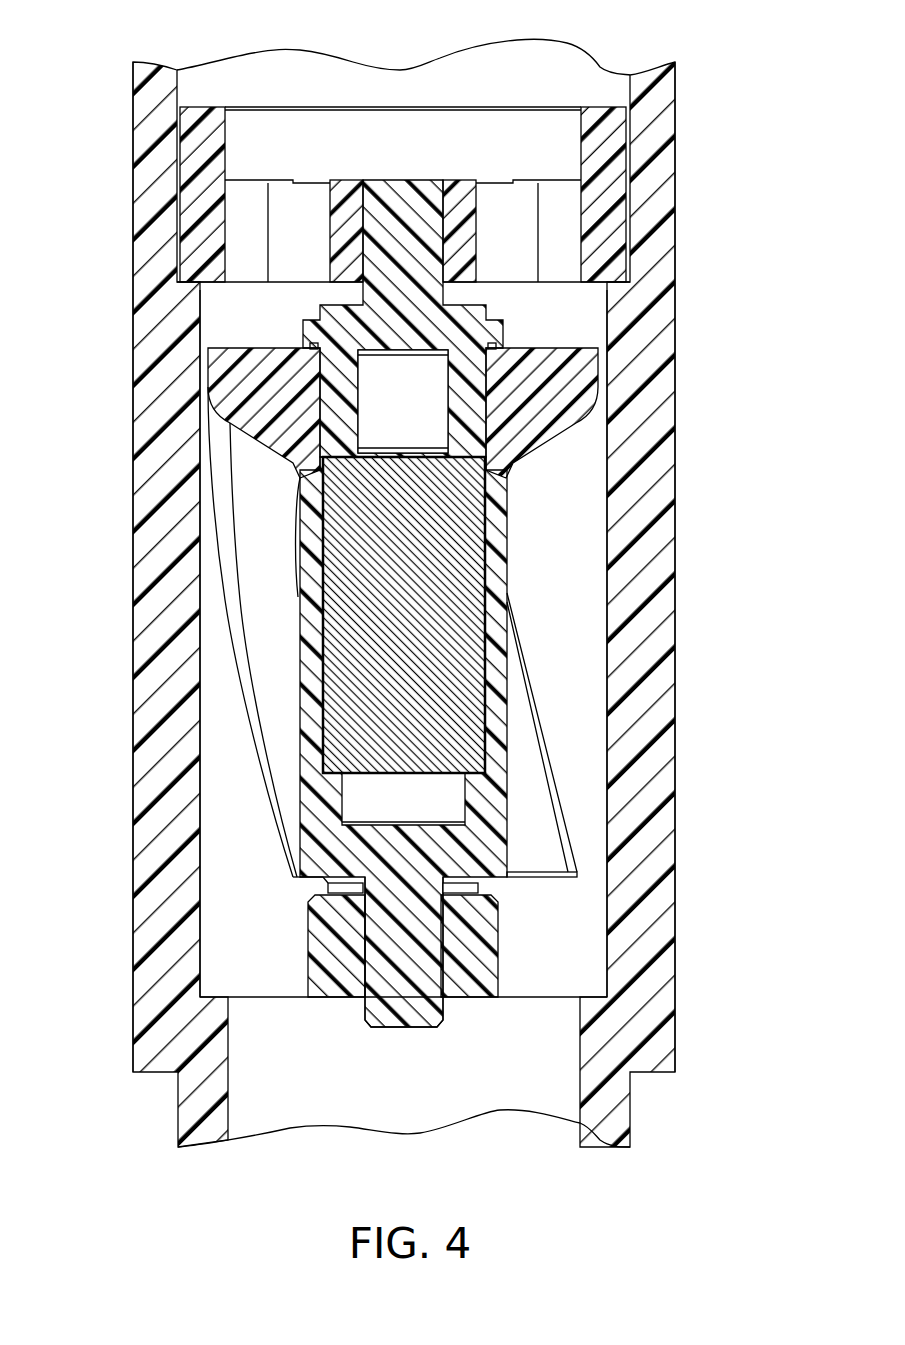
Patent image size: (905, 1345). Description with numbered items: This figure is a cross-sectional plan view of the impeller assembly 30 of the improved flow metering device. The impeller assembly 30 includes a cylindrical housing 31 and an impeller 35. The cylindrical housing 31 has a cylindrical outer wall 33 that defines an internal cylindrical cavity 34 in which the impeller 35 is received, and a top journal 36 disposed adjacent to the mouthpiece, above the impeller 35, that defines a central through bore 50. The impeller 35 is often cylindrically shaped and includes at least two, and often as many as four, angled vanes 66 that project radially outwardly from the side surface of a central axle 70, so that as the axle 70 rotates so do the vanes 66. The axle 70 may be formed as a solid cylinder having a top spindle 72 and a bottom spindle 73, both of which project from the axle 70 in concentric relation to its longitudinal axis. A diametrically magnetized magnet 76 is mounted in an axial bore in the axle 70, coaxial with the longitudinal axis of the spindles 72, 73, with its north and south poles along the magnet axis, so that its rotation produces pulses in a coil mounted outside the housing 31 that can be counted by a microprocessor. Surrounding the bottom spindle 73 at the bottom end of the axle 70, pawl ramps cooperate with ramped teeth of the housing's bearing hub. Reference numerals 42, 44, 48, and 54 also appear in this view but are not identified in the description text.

The impeller assembly 30 is at (565, 585).
The cylindrical housing 31 is at (645, 770).
The cylindrical outer wall 33 is at (677, 688).
The internal cylindrical cavity 34 is at (264, 975).
The impeller 35 is at (510, 520).
The top journal 36 is at (462, 200).
The chamber shoulder 42 is at (210, 995).
The housing 44 is at (684, 156).
The lower gland ring 48 is at (505, 952).
The central through bore 50 is at (372, 203).
The lower bore opening 54 is at (342, 997).
The angled vanes 66 is at (275, 717).
The central axle 70 is at (497, 627).
The top spindle 72 is at (403, 200).
The bottom spindle 73 is at (412, 1003).
The diametrically magnetized magnet 76 is at (390, 527).